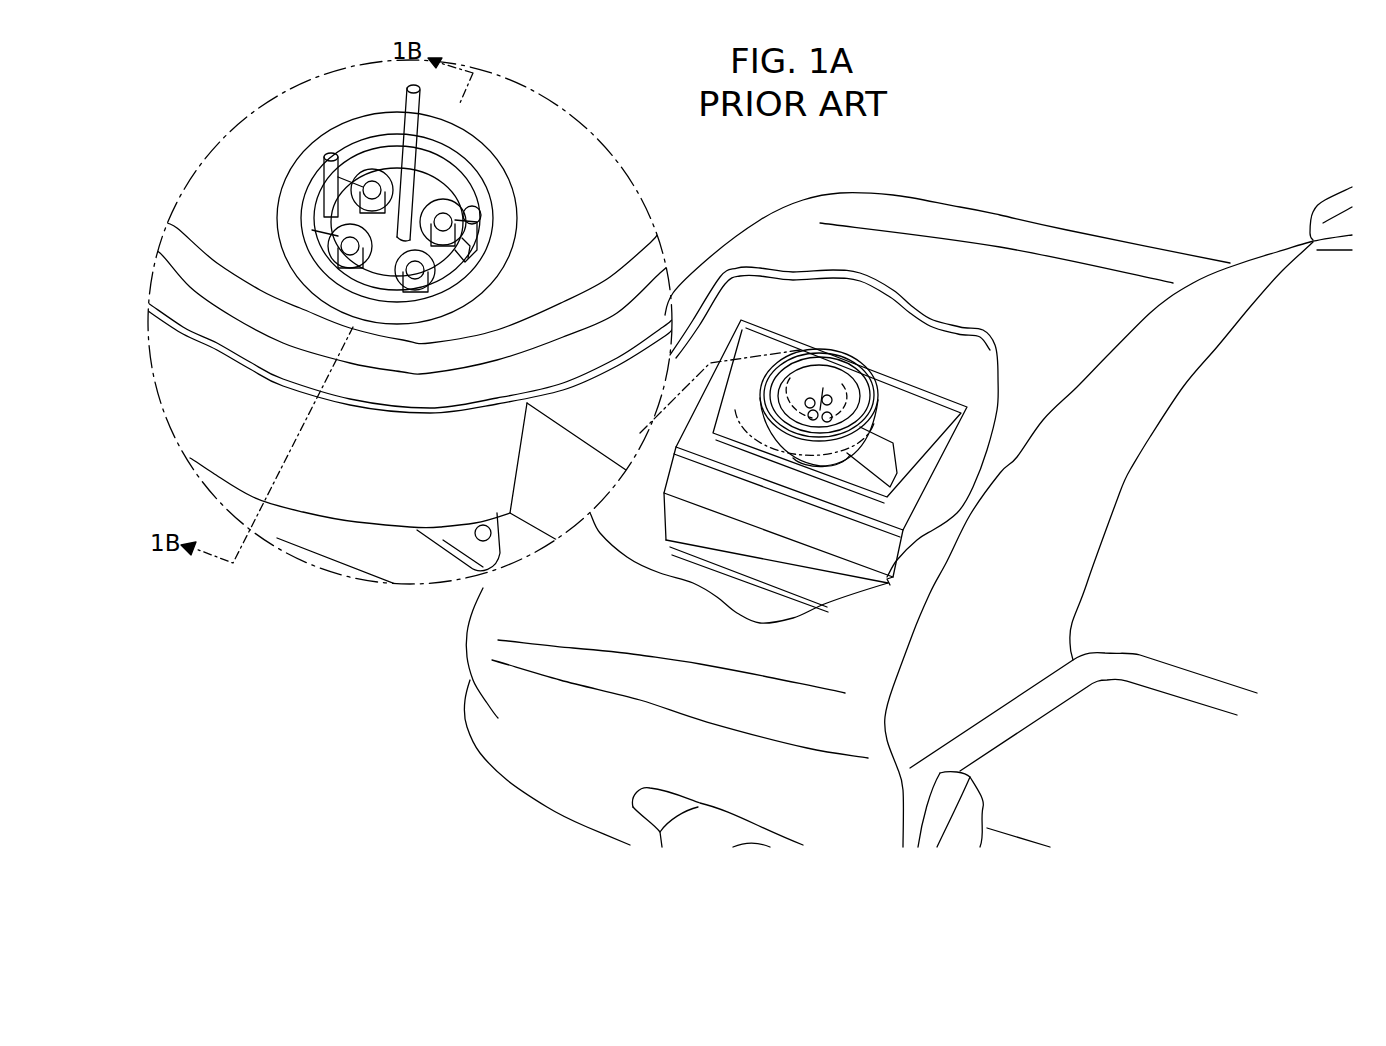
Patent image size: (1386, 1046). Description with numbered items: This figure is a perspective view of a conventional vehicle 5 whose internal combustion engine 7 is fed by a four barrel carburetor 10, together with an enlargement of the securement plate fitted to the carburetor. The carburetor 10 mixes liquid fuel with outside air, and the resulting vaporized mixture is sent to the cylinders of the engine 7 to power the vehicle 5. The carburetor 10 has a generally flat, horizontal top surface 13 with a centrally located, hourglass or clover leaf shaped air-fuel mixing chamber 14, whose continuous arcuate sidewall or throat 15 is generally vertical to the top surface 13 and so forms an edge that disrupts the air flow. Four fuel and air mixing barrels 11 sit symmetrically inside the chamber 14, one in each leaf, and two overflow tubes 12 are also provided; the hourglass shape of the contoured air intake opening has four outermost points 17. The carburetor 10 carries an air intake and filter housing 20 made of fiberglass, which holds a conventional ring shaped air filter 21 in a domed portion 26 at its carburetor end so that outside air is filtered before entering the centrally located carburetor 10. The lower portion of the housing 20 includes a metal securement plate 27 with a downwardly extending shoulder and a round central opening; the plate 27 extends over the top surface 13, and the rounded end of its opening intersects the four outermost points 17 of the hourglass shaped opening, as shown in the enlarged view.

The vehicle 5 is at (1085, 228).
The internal combustion engine 7 is at (944, 388).
The carburetor 10 is at (835, 398).
The fuel and air mixing barrels 11 is at (497, 197).
The overflow tubes 12 is at (505, 238).
The top surface 13 is at (473, 257).
The air-fuel mixing chamber 14 is at (423, 187).
The continuous arcuate sidewall or throat 15 is at (455, 175).
The outermost points 17 is at (367, 137).
The air intake and filter housing 20 is at (847, 347).
The ring shaped air filter 21 is at (800, 387).
The domed portion 26 is at (237, 226).
The metal securement plate 27 is at (325, 142).